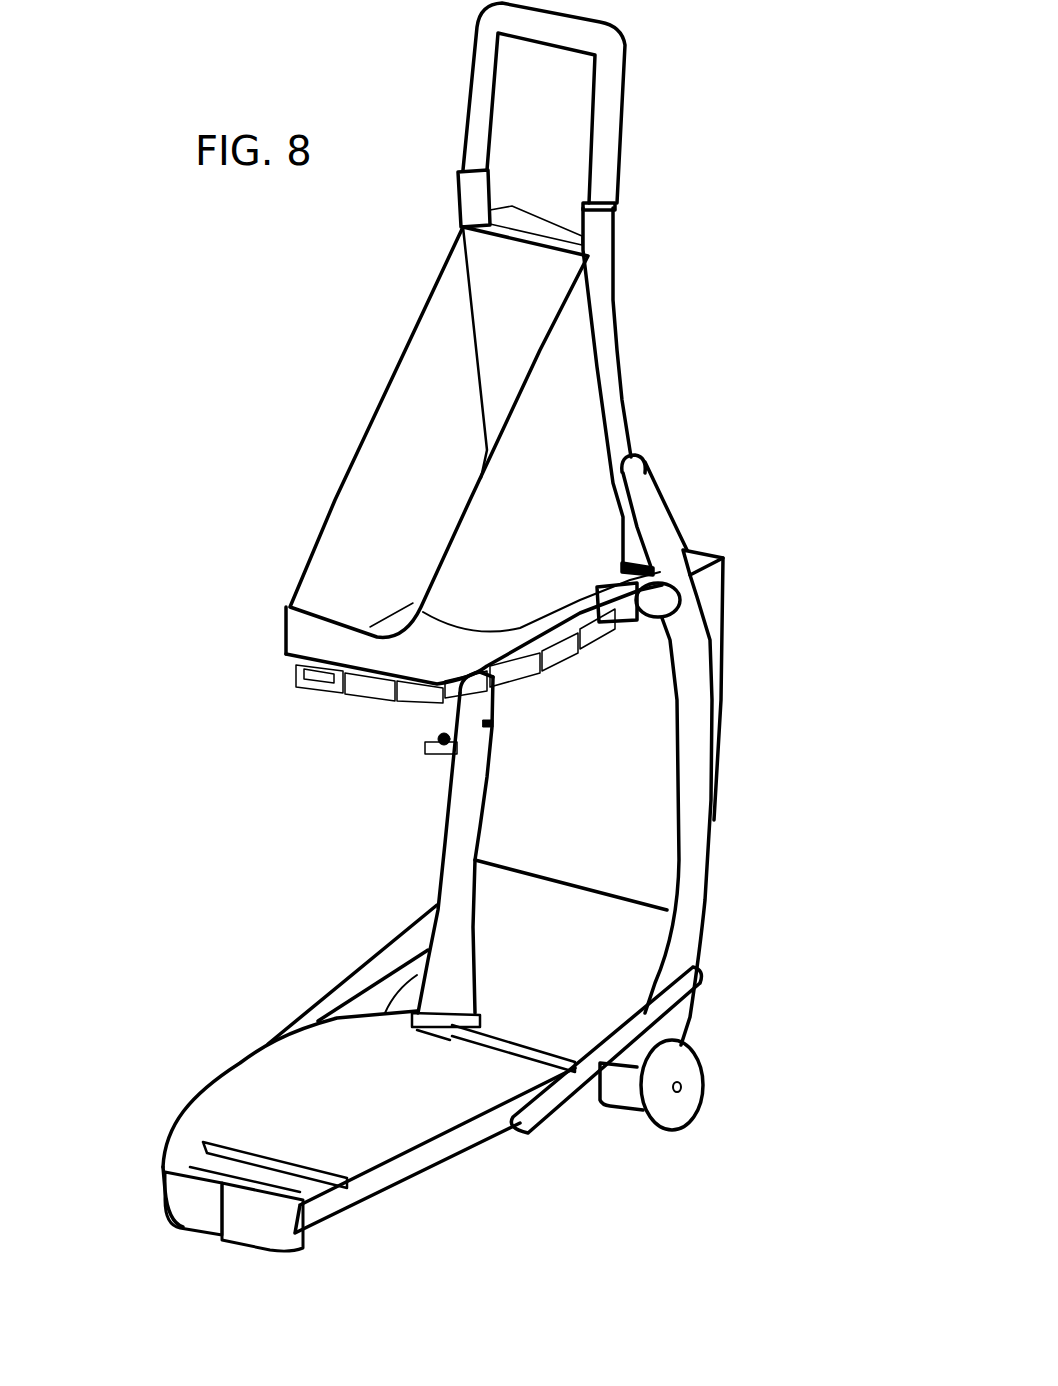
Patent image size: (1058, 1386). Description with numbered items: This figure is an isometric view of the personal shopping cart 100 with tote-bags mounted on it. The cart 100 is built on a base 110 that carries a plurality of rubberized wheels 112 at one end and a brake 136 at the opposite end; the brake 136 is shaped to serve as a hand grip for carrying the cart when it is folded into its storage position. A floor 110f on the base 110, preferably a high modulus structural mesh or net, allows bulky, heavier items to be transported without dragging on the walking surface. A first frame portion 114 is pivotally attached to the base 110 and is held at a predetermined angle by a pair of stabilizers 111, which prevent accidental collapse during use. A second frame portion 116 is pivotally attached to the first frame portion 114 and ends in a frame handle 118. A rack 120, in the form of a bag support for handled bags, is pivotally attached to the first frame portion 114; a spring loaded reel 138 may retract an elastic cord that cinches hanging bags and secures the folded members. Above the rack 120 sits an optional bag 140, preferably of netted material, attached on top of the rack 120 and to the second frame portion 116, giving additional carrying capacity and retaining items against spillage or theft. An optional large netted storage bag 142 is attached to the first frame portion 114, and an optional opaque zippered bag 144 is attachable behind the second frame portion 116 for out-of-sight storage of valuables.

The personal shopping cart 100 is at (265, 303).
The base 110 is at (427, 1153).
The floor 110f is at (227, 1110).
The stabilizers 111 is at (400, 933).
The wheels 112 is at (700, 1060).
The first frame portion 114 is at (697, 885).
The second frame portion 116 is at (612, 407).
The frame handle 118 is at (608, 118).
The rack 120 is at (370, 703).
The brake 136 is at (197, 1200).
The spring loaded reel 138 is at (433, 722).
The bag 140 is at (303, 555).
The bag 142 is at (713, 588).
The bag 144 is at (538, 220).